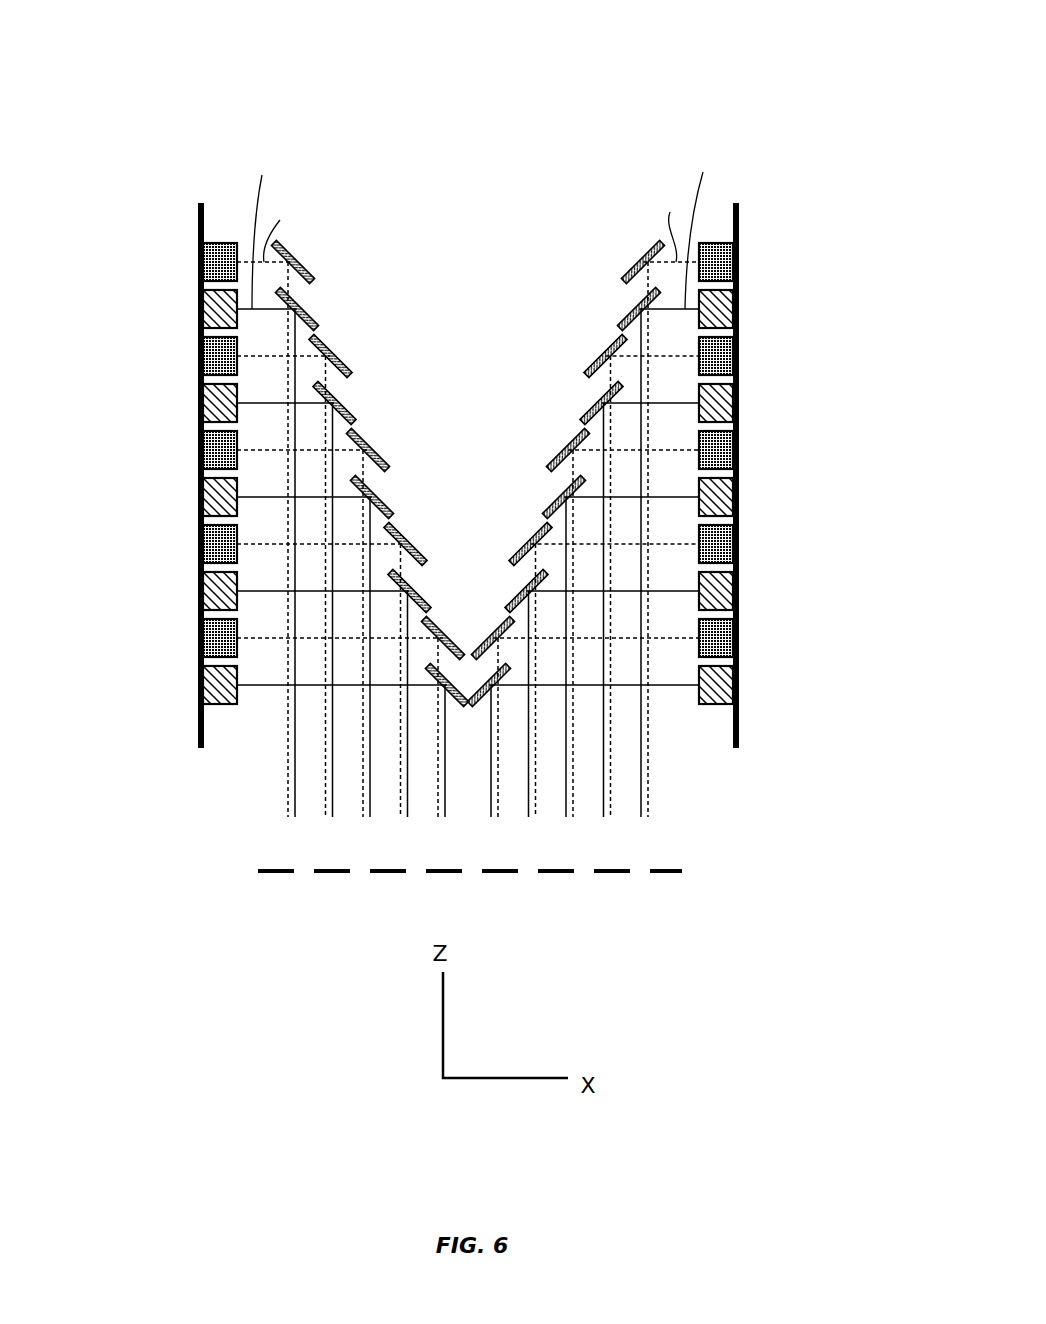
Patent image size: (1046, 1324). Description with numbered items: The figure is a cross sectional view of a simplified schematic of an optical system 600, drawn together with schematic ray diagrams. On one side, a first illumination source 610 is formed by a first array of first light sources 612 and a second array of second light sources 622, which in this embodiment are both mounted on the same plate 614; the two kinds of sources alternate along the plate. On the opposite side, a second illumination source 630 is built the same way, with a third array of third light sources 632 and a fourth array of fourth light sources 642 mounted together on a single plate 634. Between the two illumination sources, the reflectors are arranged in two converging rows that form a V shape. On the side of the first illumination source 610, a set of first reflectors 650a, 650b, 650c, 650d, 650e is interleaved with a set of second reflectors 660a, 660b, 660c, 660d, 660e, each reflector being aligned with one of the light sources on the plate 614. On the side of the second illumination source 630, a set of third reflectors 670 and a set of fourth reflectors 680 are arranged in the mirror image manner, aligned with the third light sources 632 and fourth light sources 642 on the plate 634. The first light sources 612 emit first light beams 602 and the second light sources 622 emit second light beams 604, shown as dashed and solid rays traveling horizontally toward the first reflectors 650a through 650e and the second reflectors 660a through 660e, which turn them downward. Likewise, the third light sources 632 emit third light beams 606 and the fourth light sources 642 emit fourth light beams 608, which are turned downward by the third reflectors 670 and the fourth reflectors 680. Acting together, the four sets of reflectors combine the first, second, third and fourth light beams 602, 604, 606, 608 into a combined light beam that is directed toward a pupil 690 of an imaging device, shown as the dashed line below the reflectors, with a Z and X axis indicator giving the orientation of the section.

The optical system 600 is at (175, 45).
The first light beams 602 is at (295, 229).
The second light beams 604 is at (263, 229).
The third light beams 606 is at (665, 223).
The fourth light beams 608 is at (700, 227).
The first illumination source 610 is at (184, 170).
The first light sources 612 is at (213, 259).
The plate 614 is at (198, 732).
The second light sources 622 is at (210, 312).
The second illumination source 630 is at (752, 170).
The third light sources 632 is at (723, 260).
The plate 634 is at (769, 758).
The fourth light sources 642 is at (721, 314).
The first reflector 650a is at (301, 269).
The first reflector 650b is at (339, 364).
The first reflector 650c is at (376, 458).
The first reflector 650d is at (413, 551).
The first reflector 650e is at (449, 644).
The second reflector 660a is at (306, 318).
The second reflector 660b is at (343, 412).
The second reflector 660c is at (380, 506).
The second reflector 660d is at (417, 598).
The second reflector 660e is at (455, 692).
The third reflectors 670 is at (651, 254).
The fourth reflectors 680 is at (632, 317).
The pupil 690 is at (670, 872).